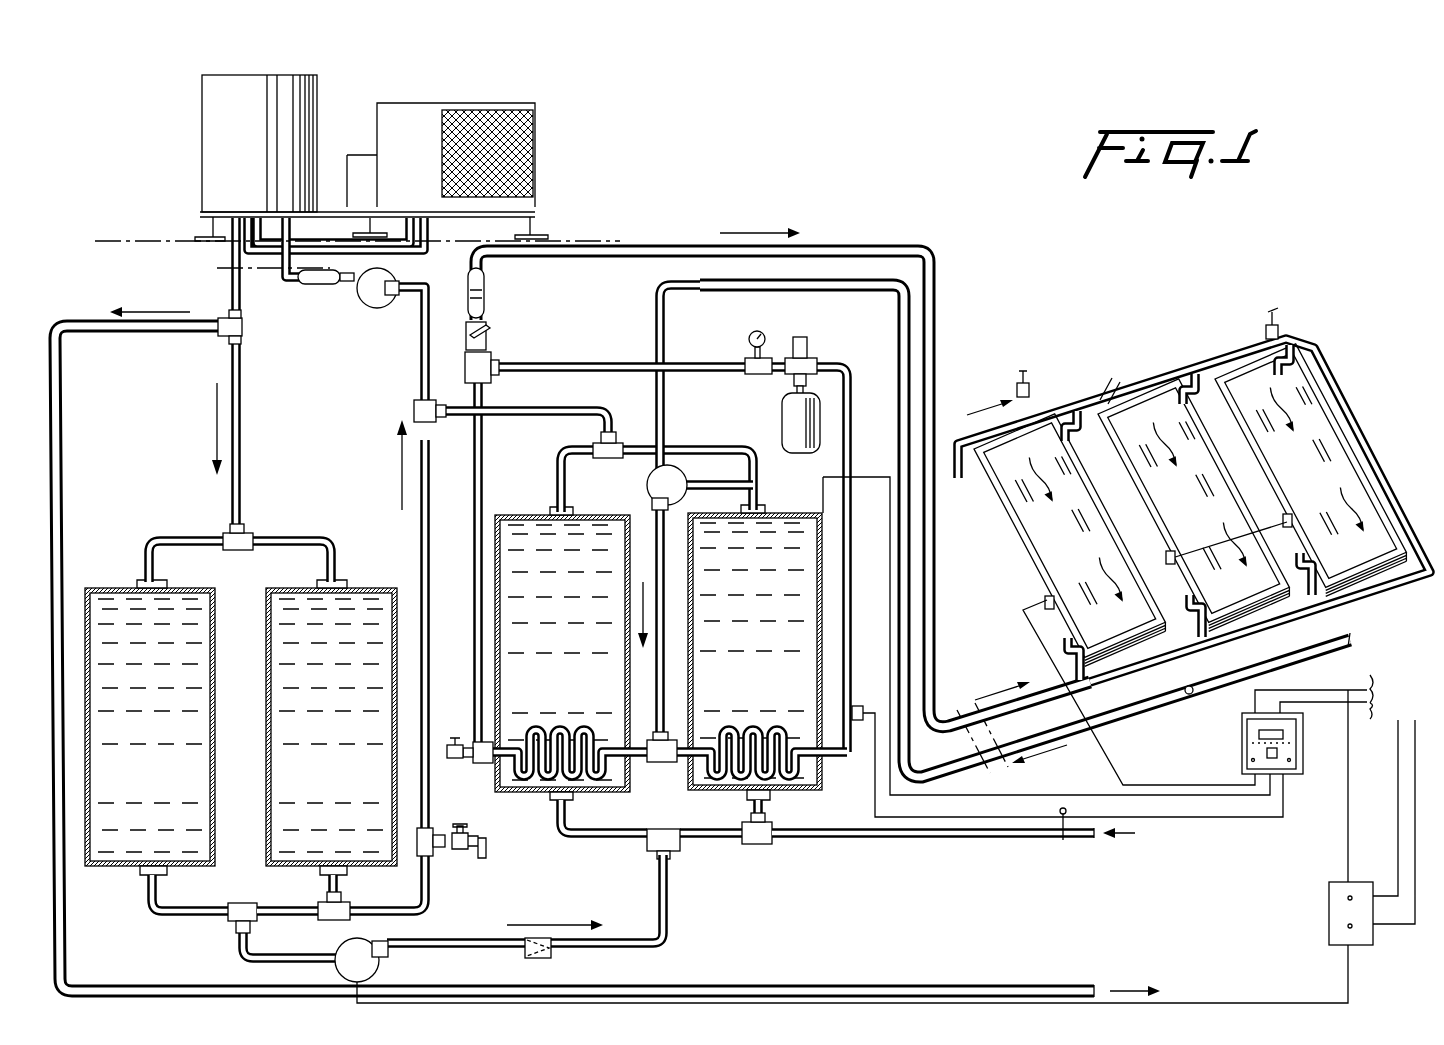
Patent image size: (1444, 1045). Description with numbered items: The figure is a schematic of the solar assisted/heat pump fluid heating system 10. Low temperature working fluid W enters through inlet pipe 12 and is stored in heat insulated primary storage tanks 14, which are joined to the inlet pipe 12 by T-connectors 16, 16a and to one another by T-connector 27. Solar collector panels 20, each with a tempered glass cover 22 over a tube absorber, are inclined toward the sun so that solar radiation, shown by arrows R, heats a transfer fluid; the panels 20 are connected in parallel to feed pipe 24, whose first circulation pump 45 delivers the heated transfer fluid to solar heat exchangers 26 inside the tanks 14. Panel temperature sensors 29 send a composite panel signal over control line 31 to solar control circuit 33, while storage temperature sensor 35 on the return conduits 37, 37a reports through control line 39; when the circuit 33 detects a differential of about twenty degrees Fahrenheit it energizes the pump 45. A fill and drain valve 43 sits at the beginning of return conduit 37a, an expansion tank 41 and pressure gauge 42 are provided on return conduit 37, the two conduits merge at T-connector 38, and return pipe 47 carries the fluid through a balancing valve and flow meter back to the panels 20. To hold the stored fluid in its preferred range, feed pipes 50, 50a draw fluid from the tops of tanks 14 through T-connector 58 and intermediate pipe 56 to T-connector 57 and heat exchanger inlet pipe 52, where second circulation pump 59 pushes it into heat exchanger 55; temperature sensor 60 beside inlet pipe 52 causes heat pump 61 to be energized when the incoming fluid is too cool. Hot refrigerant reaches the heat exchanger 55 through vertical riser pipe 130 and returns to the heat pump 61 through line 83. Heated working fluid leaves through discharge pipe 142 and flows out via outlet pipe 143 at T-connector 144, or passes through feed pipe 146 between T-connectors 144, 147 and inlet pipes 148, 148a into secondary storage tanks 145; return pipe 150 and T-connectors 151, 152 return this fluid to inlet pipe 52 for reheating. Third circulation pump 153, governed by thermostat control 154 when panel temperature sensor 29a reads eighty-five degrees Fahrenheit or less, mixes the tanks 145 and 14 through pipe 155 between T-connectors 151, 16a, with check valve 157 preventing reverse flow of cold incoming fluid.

The solar assisted/heat pump fluid heating system 10 is at (913, 232).
The inlet pipe 12 is at (934, 838).
The heat insulated storage tanks 14 is at (495, 542).
The T-connector 16 is at (767, 845).
The T-connector 16a is at (668, 848).
The solar collector panels 20 is at (1238, 330).
The tempered glass cover 22 is at (1017, 510).
The feed pipe 24 is at (663, 640).
The solar heat exchangers 26 is at (563, 730).
The T-connector 27 is at (660, 767).
The panel temperature sensors 29 is at (1040, 603).
The panel temperature sensor 29a is at (1173, 557).
The control line 31 is at (1189, 697).
The solar control circuit 33 is at (1303, 741).
The storage temperature sensor 35 is at (861, 722).
The return conduit 37 is at (853, 625).
The return conduit 37a is at (480, 462).
The T-connector 38 is at (482, 368).
The control line 39 is at (1063, 840).
The expansion tank 41 is at (823, 407).
The pressure gauge 42 is at (768, 343).
The shut-off valve 43 is at (460, 762).
The first circulation pump 45 is at (650, 485).
The return pipe 47 is at (680, 246).
The feed pipe 50 is at (720, 442).
The feed pipe 50a is at (557, 485).
The heat exchanger inlet pipe 52 is at (270, 240).
The heat exchanger 55 is at (213, 170).
The intermediate pipe 56 is at (530, 405).
The T-connector 57 is at (420, 408).
The T-connector 58 is at (613, 445).
The second circulation pump 59 is at (370, 305).
The temperature sensor 60 is at (300, 215).
The heat pump 61 is at (520, 137).
The line 83 is at (430, 232).
The vertical riser pipe 130 is at (398, 235).
The discharge pipe 142 is at (232, 292).
The outlet pipe 143 is at (92, 332).
The T-connector 144 is at (242, 328).
The secondary fluid storage tanks 145 is at (300, 585).
The feed pipe 146 is at (240, 455).
The T-connector 147 is at (245, 530).
The inlet pipe 148 is at (305, 538).
The inlet pipe 148a is at (175, 535).
The return pipe 150 is at (422, 550).
The T-connector 151 is at (247, 902).
The T-connector 152 is at (342, 908).
The third circulation pump 153 is at (380, 945).
The thermostat control 154 is at (1329, 909).
The pipe 155 is at (450, 943).
The check valve 157 is at (525, 953).
The arrows indicating solar radiation R is at (1345, 462).
The low temperature working fluid W is at (759, 682).